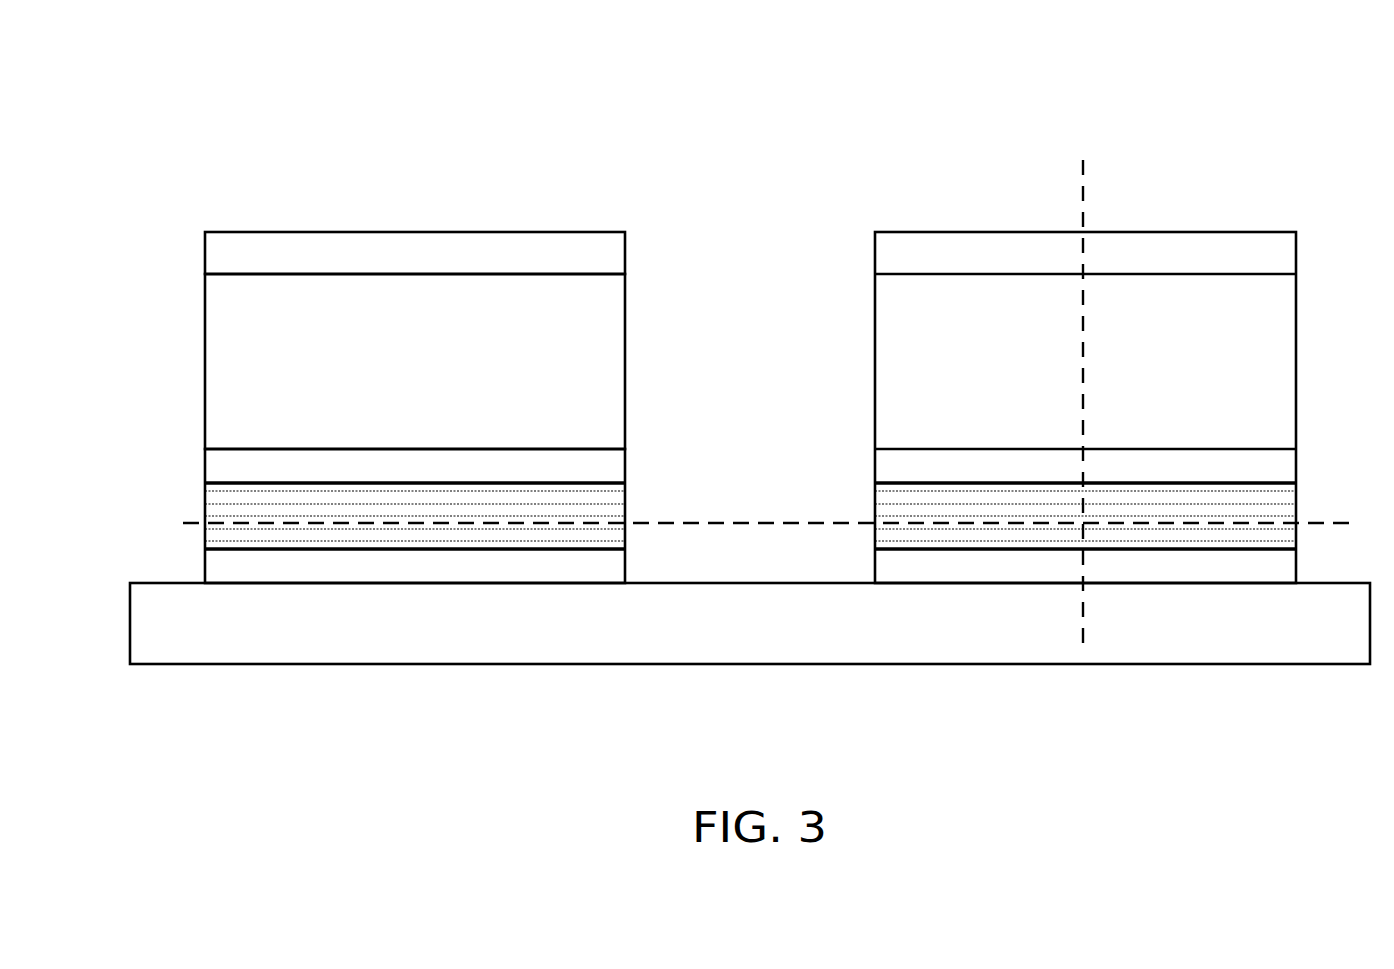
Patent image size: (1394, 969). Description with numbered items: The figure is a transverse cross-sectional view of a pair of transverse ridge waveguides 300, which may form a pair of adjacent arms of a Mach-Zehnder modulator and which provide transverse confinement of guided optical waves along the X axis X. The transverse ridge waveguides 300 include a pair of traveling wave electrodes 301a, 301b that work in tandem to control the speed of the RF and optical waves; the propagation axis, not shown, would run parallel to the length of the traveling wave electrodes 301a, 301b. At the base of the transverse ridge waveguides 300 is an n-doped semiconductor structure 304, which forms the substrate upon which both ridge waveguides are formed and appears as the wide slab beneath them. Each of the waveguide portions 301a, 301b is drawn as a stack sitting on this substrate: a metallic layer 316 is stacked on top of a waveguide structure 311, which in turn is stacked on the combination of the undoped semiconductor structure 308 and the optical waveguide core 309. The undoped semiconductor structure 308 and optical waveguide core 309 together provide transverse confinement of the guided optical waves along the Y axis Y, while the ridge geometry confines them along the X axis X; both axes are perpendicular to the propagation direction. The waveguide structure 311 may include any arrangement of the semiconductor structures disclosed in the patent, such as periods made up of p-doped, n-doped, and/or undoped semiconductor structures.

The transverse ridge waveguides 300 is at (128, 124).
The traveling wave electrode 301a is at (190, 243).
The traveling wave electrode 301b is at (862, 245).
The n-doped semiconductor structure 304 is at (130, 635).
The undoped semiconductor structure 308 is at (409, 516).
The optical waveguide core 309 is at (626, 510).
The waveguide structure 311 is at (626, 389).
The metallic layer 316 is at (274, 231).
The X axis X is at (1318, 523).
The Y axis Y is at (1083, 190).